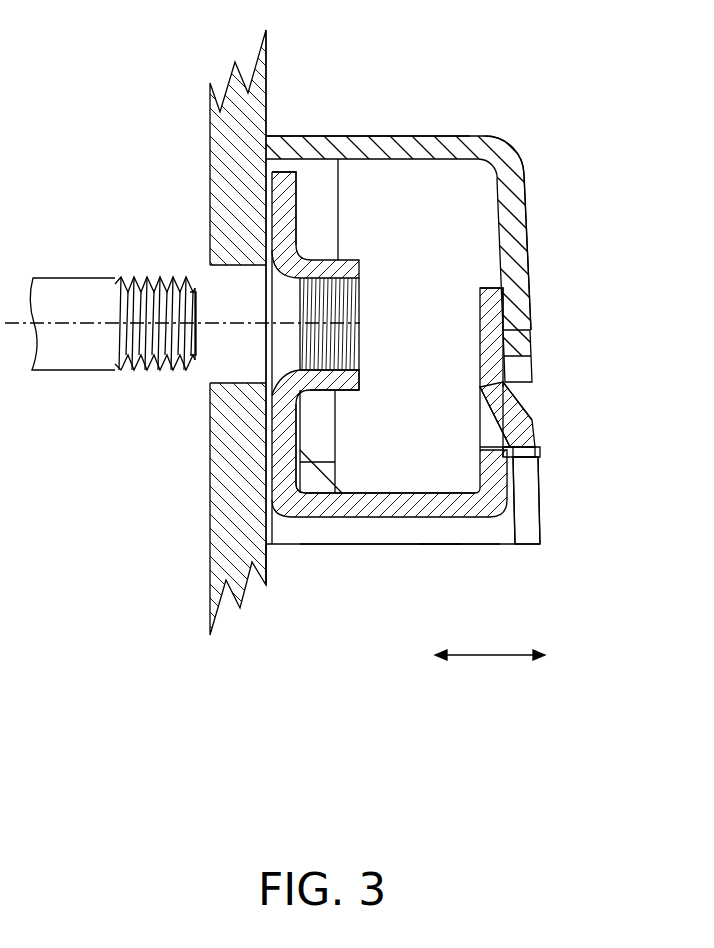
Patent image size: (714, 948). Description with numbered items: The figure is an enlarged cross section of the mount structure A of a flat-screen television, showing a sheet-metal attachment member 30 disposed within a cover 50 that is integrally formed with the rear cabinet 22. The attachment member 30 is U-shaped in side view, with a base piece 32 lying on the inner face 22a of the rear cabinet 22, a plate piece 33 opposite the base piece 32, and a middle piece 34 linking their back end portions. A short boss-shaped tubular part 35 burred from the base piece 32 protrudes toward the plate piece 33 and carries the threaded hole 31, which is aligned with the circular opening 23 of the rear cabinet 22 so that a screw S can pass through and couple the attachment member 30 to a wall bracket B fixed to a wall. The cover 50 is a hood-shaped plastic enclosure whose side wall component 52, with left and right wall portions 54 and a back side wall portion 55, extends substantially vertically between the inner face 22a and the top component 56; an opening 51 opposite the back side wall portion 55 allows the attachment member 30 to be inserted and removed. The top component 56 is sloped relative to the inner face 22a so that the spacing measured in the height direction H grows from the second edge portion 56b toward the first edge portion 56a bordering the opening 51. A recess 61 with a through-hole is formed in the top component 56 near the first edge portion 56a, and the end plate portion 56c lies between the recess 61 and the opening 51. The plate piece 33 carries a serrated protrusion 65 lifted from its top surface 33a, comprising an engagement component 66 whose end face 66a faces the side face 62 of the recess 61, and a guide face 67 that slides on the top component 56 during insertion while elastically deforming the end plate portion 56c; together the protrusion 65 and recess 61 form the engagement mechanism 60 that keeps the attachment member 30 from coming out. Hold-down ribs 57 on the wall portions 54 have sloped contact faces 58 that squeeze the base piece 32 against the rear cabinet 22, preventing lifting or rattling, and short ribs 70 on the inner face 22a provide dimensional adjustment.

The rear cabinet 22 is at (210, 148).
The inner face 22a is at (270, 547).
The circular opening 23 is at (222, 282).
The attachment member 30 is at (365, 269).
The threaded hole 31 is at (353, 350).
The base piece 32 is at (292, 194).
The plate piece 33 is at (487, 323).
The top surface 33a is at (512, 336).
The middle piece 34 is at (344, 518).
The tubular part 35 is at (343, 396).
The cover 50 is at (533, 208).
The opening 51 is at (445, 547).
The side wall component 52 is at (402, 136).
The left and right wall portions 54 is at (395, 548).
The back side wall portion 55 is at (360, 136).
The top component 56 is at (531, 265).
The first edge portion 56a is at (542, 545).
The second edge portion 56b is at (514, 150).
The end plate portion 56c is at (538, 498).
The hold-down rib 57 is at (336, 450).
The contact face 58 is at (303, 427).
The engagement mechanism 60 is at (560, 446).
The recess 61 is at (527, 389).
The side face 62 is at (541, 455).
The protrusion 65 is at (529, 433).
The engagement component 66 is at (500, 438).
The end face 66a is at (518, 453).
The guide face 67 is at (523, 399).
The rib 70 is at (283, 530).
The mount structure A is at (495, 119).
The wall bracket B is at (38, 253).
The screw S is at (67, 290).
The height direction H is at (493, 655).